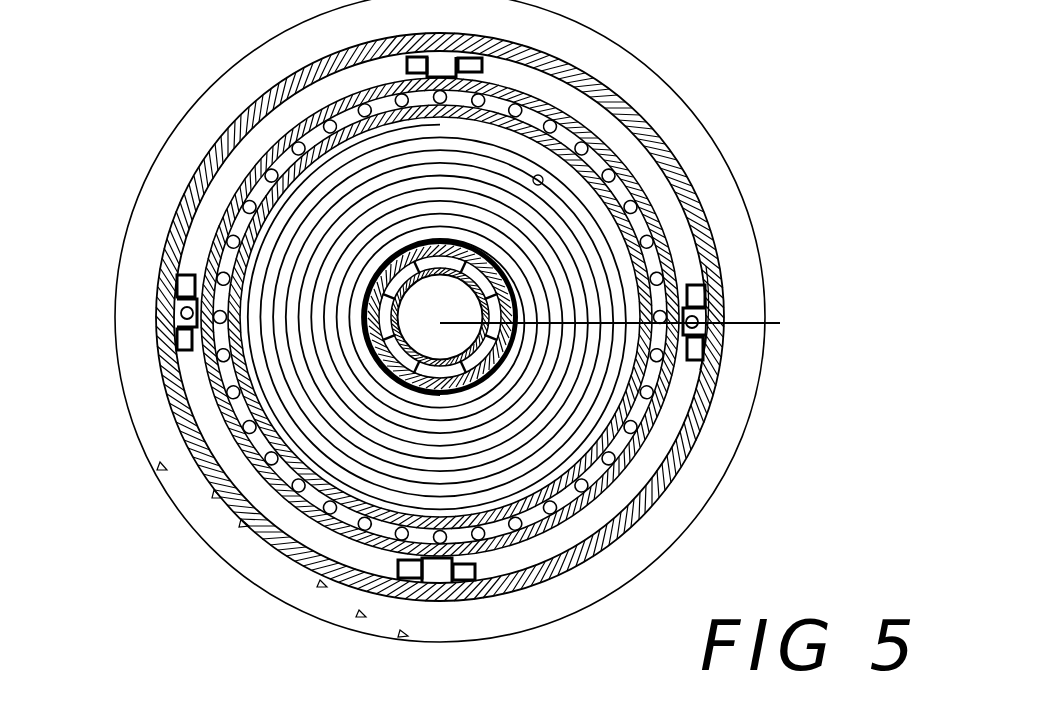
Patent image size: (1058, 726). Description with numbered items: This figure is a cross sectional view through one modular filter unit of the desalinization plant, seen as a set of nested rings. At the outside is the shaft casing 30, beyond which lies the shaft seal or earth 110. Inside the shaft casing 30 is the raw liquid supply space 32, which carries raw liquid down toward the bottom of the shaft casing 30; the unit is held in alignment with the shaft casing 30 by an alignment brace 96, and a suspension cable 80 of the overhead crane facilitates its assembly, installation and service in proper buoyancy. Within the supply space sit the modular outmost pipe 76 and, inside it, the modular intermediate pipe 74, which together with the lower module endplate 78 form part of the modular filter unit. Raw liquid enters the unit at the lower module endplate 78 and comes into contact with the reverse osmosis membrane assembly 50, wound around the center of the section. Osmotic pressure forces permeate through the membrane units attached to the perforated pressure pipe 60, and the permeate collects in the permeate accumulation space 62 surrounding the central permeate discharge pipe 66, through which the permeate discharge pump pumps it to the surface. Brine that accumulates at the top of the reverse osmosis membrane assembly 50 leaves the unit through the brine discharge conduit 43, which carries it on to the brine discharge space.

The shaft seal or earth 110 is at (147, 450).
The raw liquid supply space 32 is at (192, 390).
The modular intermediate pipe 74 is at (705, 272).
The alignment brace 96 is at (177, 297).
The shaft casing 30 is at (178, 333).
The suspension cable 80 is at (693, 313).
The lower module endplate 78 is at (233, 190).
The modular outmost pipe 76 is at (668, 236).
The brine discharge conduit 43 is at (215, 252).
The reverse osmosis membrane assembly 50 is at (573, 212).
The perforated pressure pipe 60 is at (450, 390).
The permeate discharge pipe 66 is at (498, 402).
The permeate accumulation space 62 is at (465, 352).